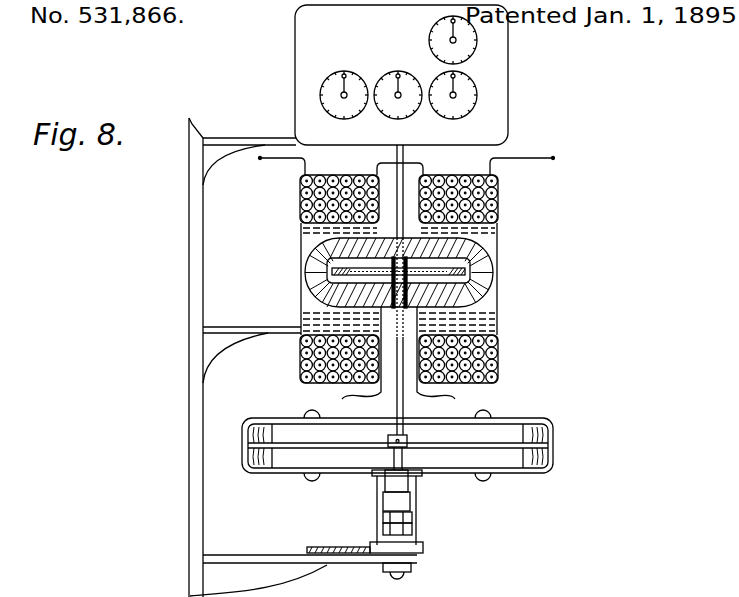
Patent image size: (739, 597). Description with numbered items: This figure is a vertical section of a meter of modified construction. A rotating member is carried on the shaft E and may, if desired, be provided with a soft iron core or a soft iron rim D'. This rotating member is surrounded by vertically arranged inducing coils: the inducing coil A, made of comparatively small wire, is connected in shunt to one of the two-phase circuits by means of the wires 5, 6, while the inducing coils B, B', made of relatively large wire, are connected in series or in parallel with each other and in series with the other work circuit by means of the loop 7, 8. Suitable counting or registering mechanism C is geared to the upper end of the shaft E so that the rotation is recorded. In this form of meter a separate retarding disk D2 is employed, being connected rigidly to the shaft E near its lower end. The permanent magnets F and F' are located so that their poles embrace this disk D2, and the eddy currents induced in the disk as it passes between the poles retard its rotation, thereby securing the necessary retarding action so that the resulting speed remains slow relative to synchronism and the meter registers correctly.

The counting or registering mechanism C is at (401, 75).
The loop wire 7 is at (273, 170).
The loop wire 8 is at (528, 170).
The inducing coil A is at (317, 261).
The soft iron rim D' is at (439, 260).
The inducing coil B is at (320, 279).
The inducing coil B' is at (472, 279).
The shunt wire 5 is at (355, 357).
The shunt wire 6 is at (440, 357).
The shaft E is at (401, 400).
The permanent magnet F is at (397, 442).
The permanent magnet F' is at (381, 521).
The retarding disk D2 is at (548, 445).